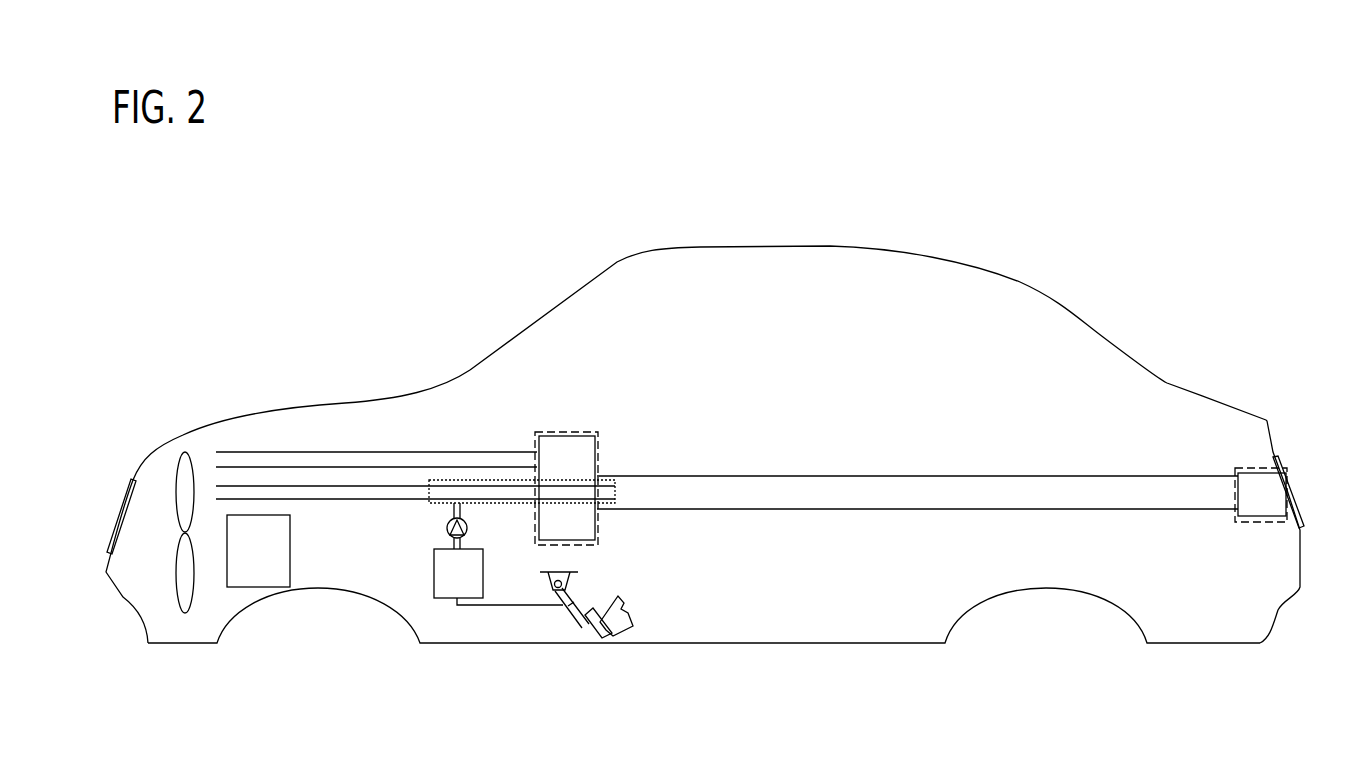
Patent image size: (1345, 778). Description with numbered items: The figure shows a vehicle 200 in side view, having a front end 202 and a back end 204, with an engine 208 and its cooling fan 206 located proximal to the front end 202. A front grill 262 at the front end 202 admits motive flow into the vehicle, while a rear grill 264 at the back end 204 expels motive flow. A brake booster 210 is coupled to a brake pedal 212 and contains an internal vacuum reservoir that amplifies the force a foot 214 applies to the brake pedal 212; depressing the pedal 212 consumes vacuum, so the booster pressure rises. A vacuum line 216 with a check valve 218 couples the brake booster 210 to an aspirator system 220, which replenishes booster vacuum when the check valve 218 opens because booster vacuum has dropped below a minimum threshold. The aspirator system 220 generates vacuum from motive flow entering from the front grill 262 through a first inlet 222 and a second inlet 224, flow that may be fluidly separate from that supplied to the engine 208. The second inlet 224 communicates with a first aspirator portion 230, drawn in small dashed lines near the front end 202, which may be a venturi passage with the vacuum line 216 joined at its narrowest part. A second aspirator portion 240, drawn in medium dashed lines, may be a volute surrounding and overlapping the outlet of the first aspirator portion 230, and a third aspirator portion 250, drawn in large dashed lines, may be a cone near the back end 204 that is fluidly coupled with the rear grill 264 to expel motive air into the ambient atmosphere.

The vehicle 200 is at (233, 166).
The front end 202 is at (150, 388).
The back end 204 is at (1280, 282).
The cooling fan 206 is at (178, 517).
The engine 208 is at (274, 561).
The brake booster 210 is at (473, 584).
The brake pedal 212 is at (575, 617).
The foot 214 is at (602, 643).
The vacuum line 216 is at (453, 517).
The check valve 218 is at (473, 520).
The aspirator system 220 is at (727, 410).
The first inlet 222 is at (313, 458).
The second inlet 224 is at (317, 498).
The first aspirator portion 230 is at (446, 480).
The second aspirator portion 240 is at (568, 432).
The third aspirator portion 250 is at (1252, 468).
The front grill 262 is at (118, 513).
The rear grill 264 is at (1296, 492).